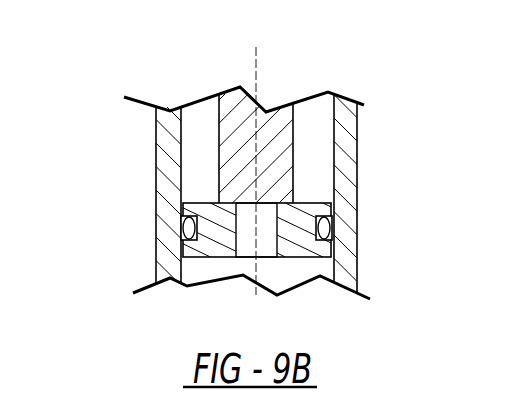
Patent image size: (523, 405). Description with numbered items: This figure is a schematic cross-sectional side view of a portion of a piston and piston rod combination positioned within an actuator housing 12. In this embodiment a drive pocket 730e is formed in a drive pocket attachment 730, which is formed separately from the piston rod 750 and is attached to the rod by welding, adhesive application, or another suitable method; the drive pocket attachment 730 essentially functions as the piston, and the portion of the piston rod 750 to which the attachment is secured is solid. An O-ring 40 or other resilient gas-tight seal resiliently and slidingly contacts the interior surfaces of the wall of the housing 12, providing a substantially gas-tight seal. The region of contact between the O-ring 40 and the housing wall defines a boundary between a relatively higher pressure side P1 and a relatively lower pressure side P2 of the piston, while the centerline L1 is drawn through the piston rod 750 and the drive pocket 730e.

The housing 12 is at (350, 180).
The piston rod 750 is at (267, 158).
The drive pocket attachment 730 is at (223, 243).
The drive pocket 730e is at (263, 238).
The O-ring 40 is at (327, 227).
The centerline axis L1 is at (256, 62).
The relatively lower pressure side P2 is at (198, 155).
The relatively higher pressure side P1 is at (212, 272).